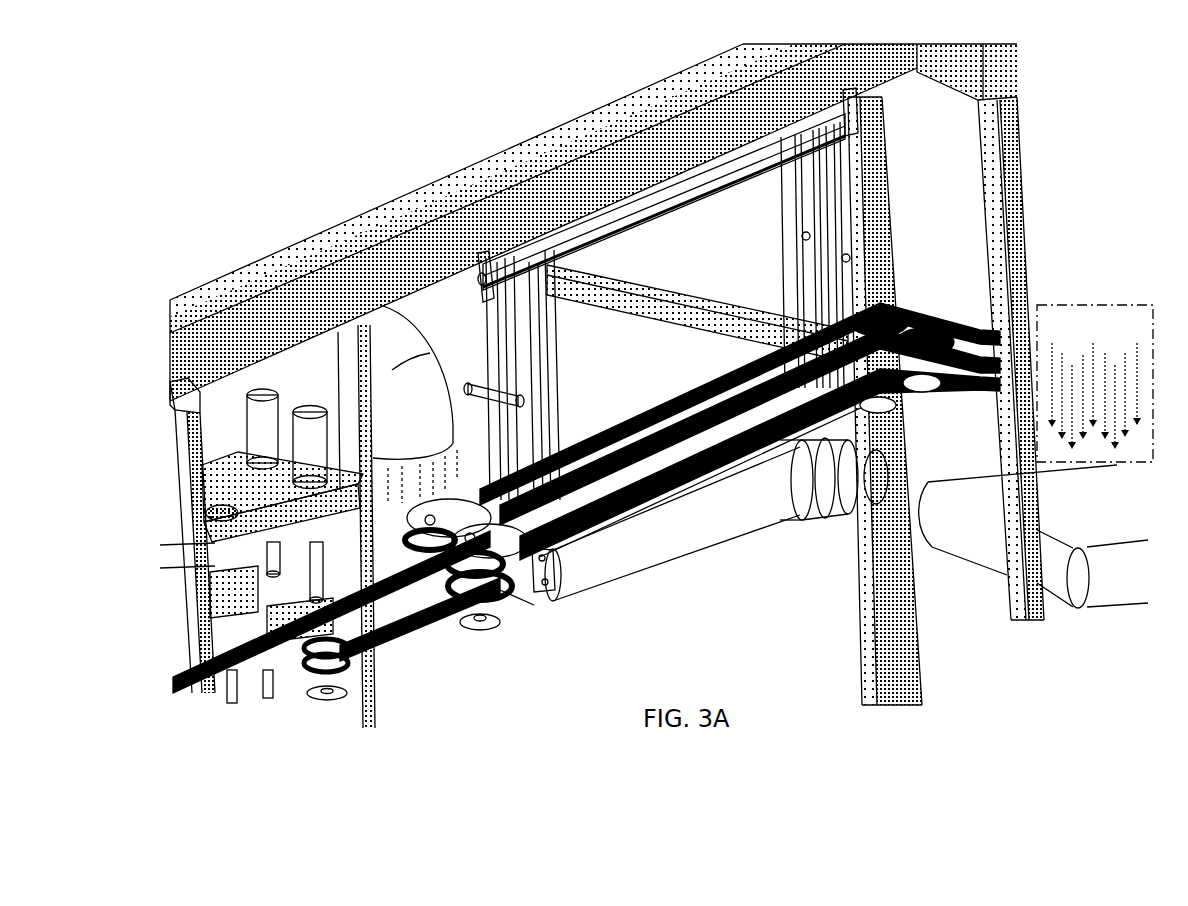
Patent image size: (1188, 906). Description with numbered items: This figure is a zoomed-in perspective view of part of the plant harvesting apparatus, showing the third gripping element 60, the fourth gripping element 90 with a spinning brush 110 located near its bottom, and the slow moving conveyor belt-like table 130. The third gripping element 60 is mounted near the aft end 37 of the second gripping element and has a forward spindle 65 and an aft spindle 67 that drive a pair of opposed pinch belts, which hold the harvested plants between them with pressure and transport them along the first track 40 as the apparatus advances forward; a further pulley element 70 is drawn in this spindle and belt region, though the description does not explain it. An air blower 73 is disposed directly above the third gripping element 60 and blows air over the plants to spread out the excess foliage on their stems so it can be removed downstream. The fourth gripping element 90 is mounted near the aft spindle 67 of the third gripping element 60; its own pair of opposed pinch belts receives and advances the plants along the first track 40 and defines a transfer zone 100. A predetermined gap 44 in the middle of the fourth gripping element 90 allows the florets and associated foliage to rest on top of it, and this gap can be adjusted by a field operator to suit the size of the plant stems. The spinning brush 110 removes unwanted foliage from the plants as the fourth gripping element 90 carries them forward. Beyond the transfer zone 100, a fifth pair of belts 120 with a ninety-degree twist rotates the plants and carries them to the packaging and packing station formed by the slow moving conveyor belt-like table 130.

The aft end 37 is at (303, 662).
The first track 40 is at (663, 428).
The predetermined gap 44 is at (922, 320).
The third gripping element 60 is at (449, 640).
The forward spindle 65 is at (359, 672).
The aft spindle 67 is at (523, 585).
The pulley 70 is at (413, 548).
The air blower 73 is at (430, 358).
The fourth gripping element 90 is at (702, 395).
The transfer zone 100 is at (1095, 383).
The spinning brush 110 is at (717, 562).
The fifth pair of belts 120 is at (972, 332).
The slow moving conveyor belt-like table 130 is at (1072, 507).